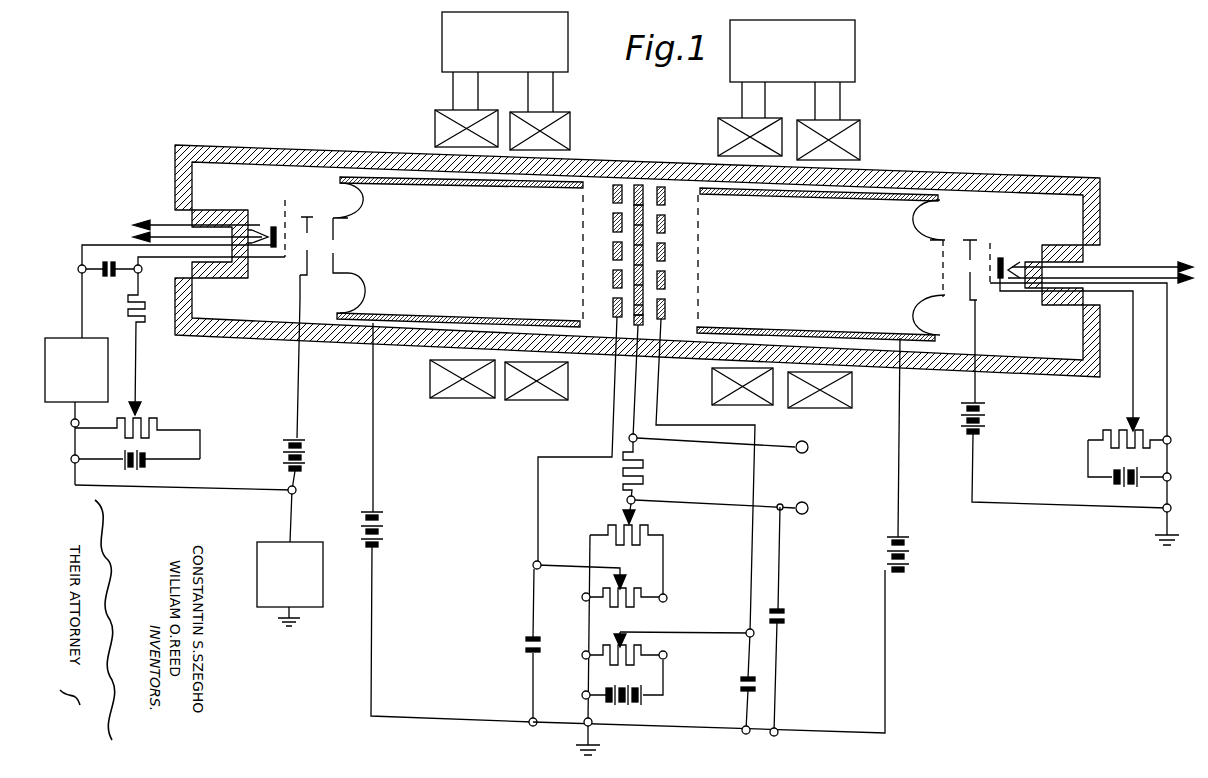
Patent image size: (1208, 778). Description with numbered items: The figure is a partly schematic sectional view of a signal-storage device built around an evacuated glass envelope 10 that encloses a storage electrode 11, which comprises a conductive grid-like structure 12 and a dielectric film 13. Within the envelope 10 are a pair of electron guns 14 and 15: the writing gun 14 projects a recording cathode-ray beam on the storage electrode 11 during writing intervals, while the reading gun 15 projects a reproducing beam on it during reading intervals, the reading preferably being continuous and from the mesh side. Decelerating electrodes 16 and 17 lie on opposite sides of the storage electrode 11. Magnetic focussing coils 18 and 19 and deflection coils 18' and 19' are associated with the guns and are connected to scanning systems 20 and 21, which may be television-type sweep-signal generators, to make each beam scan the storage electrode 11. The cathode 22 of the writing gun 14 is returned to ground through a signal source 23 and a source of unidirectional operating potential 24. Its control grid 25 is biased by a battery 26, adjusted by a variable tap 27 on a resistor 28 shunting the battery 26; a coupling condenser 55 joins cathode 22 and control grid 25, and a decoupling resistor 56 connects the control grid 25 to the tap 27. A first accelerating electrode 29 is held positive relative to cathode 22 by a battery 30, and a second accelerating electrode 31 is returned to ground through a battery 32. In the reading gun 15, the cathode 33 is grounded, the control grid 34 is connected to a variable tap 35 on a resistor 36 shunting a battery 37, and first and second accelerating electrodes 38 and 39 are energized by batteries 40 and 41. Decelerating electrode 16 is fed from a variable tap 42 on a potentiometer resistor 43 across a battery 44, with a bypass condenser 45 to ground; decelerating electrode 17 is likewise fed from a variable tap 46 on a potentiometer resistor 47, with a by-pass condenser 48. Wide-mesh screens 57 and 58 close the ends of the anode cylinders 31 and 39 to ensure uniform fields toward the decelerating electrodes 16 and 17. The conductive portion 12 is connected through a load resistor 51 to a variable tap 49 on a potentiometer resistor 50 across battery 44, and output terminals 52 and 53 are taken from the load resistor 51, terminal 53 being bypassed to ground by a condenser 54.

The evacuated glass envelope 10 is at (1015, 178).
The storage electrode 11 is at (637, 195).
The conductive grid-like structure 12 is at (644, 210).
The dielectric film 13 is at (641, 328).
The electron gun 14 is at (288, 198).
The electron gun 15 is at (1036, 233).
The decelerating electrode 16 is at (615, 187).
The decelerating electrode 17 is at (666, 192).
The magnetic focussing coil 18 is at (450, 245).
The deflection coil 18' is at (559, 249).
The magnetic focussing coil 19 is at (842, 259).
The deflection coil 19' is at (735, 254).
The scanning system 20 is at (570, 42).
The scanning system 21 is at (856, 50).
The cathode 22 is at (273, 248).
The signal source 23 is at (92, 338).
The source of unidirectional operating potential 24 is at (302, 542).
The control grid 25 is at (290, 215).
The battery 26 is at (146, 470).
The variable tap 27 is at (136, 416).
The resistor 28 is at (116, 434).
The first accelerating electrode 29 is at (313, 275).
The battery 30 is at (305, 455).
The second accelerating electrode 31 is at (402, 176).
The battery 32 is at (383, 540).
The cathode 33 is at (1000, 282).
The control grid 34 is at (990, 243).
The variable tap 35 is at (1128, 428).
The resistor 36 is at (1145, 430).
The battery 37 is at (1122, 486).
The first accelerating electrode 38 is at (963, 300).
The second accelerating electrode 39 is at (920, 195).
The battery 40 is at (985, 418).
The battery 41 is at (906, 552).
The variable tap 42 is at (622, 590).
The potentiometer resistor 43 is at (641, 606).
The battery 44 is at (642, 704).
The bypass condenser 45 is at (540, 648).
The variable tap 46 is at (617, 640).
The potentiometer resistor 47 is at (616, 664).
The by-pass condenser 48 is at (741, 684).
The variable tap 49 is at (632, 526).
The potentiometer resistor 50 is at (630, 546).
The load resistor 51 is at (644, 478).
The output terminal 52 is at (808, 449).
The output terminal 53 is at (808, 510).
The condenser 54 is at (784, 621).
The coupling condenser 55 is at (108, 264).
The decoupling resistor 56 is at (140, 309).
The wide-mesh screen 57 is at (584, 275).
The wide-mesh screen 58 is at (697, 278).